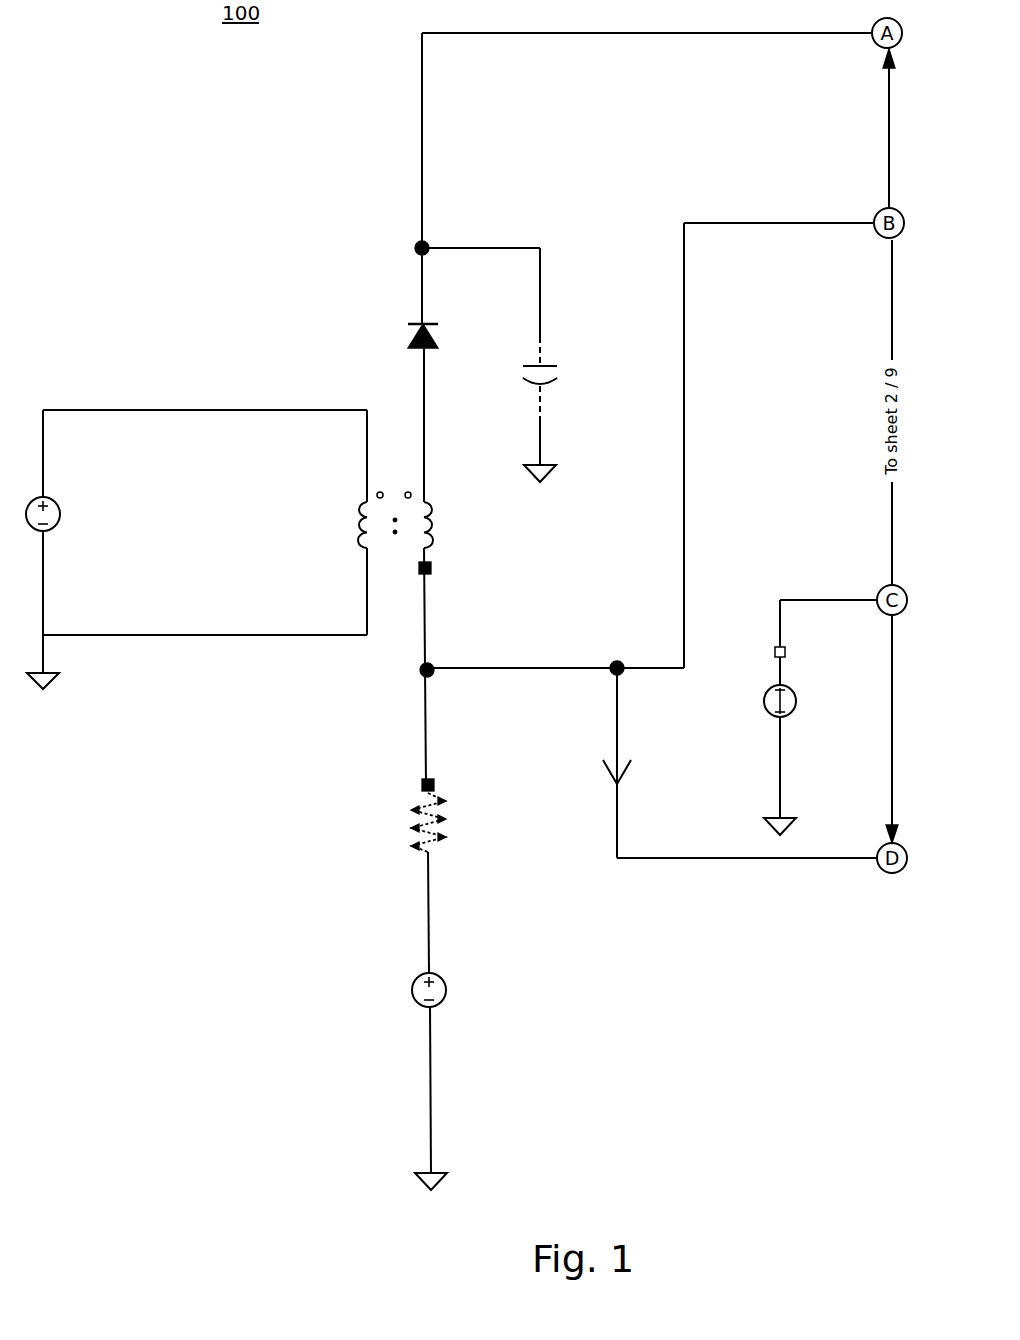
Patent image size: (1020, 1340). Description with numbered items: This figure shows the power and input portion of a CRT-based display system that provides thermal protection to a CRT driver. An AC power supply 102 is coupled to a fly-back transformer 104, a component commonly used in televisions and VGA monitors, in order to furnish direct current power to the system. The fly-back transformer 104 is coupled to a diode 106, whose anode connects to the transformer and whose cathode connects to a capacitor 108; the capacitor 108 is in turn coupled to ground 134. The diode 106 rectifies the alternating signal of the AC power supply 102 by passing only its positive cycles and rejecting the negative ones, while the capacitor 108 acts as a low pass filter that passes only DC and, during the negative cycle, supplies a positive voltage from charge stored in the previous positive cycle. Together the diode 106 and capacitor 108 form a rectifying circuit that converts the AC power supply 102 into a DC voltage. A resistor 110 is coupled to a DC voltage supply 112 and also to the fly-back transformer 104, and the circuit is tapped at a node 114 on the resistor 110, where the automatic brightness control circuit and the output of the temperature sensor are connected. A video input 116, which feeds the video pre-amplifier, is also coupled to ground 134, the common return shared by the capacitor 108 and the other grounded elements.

The AC power supply 102 is at (60, 514).
The fly-back transformer 104 is at (436, 538).
The diode 106 is at (410, 337).
The capacitor 108 is at (553, 365).
The resistor 110 is at (409, 833).
The DC voltage supply 112 is at (446, 990).
The node 114 is at (430, 665).
The video input 116 is at (797, 702).
The ground 134 is at (548, 470).